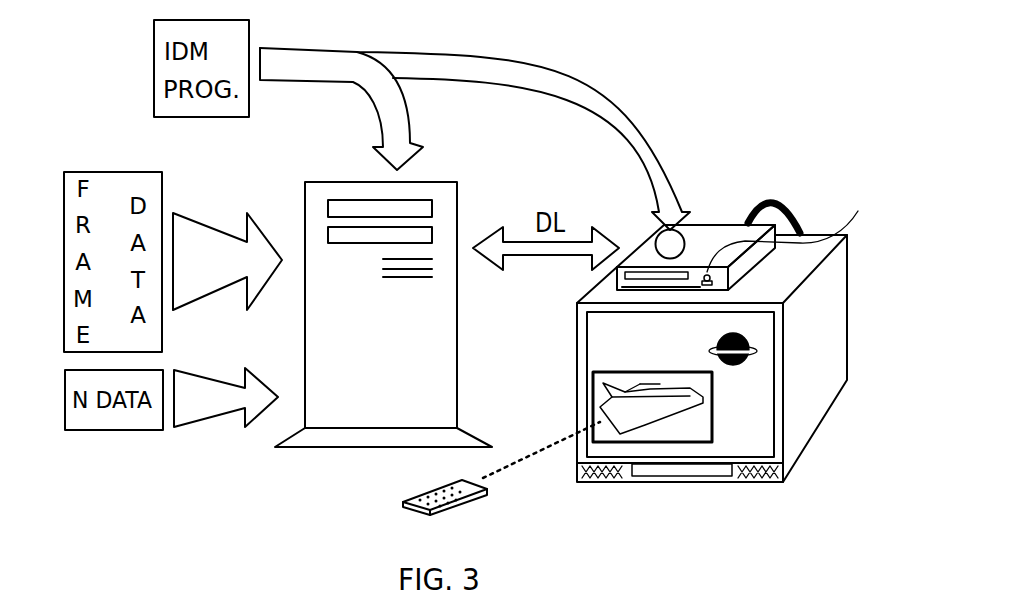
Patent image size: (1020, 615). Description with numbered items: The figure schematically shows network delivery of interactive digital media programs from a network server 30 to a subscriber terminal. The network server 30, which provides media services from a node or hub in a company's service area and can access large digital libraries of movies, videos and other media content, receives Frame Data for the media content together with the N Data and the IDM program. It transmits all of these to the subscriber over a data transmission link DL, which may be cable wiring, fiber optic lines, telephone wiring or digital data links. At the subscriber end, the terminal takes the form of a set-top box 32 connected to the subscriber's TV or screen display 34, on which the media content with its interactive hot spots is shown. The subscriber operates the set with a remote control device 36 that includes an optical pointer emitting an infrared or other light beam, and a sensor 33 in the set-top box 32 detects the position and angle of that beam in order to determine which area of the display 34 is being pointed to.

The network server 30 is at (425, 317).
The set-top box 32 is at (702, 240).
The sensor 33 is at (799, 234).
The TV or screen display 34 is at (714, 358).
The remote control device 36 is at (460, 502).